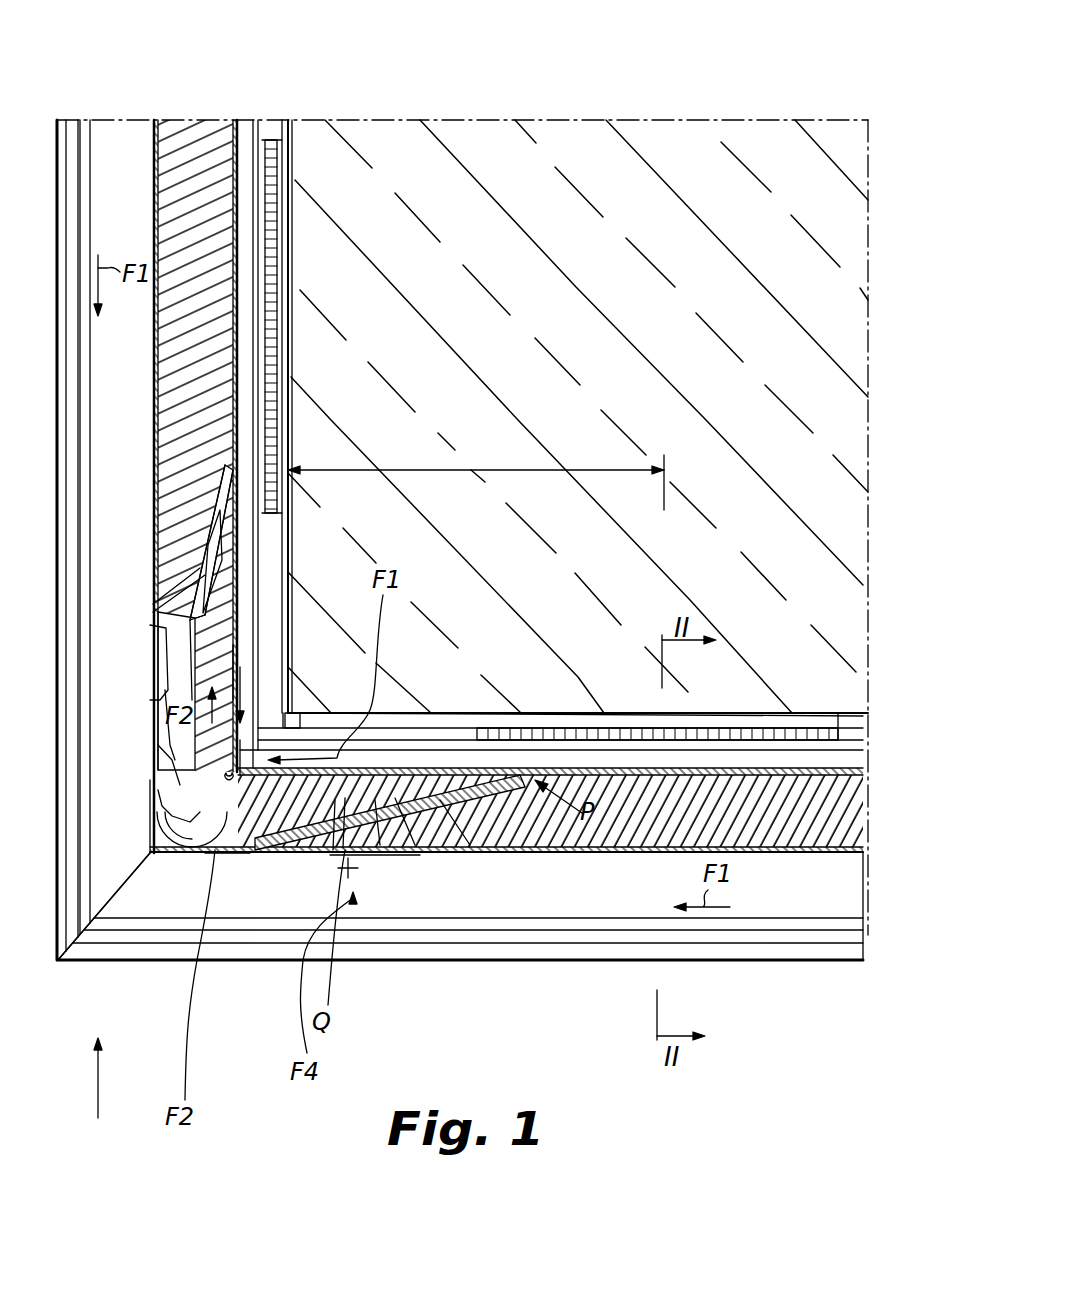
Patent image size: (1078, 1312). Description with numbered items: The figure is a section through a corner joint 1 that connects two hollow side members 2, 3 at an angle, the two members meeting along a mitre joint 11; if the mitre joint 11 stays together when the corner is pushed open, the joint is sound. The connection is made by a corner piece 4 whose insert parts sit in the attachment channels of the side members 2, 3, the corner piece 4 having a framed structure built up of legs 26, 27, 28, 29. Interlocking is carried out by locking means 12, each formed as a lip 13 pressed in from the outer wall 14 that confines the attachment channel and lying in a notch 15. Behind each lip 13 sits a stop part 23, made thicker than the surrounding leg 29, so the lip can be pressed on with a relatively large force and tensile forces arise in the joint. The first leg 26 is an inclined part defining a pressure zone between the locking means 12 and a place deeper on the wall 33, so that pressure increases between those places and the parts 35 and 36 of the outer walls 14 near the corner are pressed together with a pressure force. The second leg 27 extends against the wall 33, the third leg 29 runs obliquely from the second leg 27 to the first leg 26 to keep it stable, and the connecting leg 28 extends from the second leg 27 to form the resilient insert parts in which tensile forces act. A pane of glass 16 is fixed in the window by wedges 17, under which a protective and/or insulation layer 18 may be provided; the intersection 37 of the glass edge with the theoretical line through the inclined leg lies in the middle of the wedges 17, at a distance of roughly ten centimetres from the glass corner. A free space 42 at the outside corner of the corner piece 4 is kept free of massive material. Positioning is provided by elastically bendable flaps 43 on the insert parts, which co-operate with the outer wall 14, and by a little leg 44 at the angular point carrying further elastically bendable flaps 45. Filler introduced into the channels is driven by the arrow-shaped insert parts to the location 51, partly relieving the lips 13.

The corner joint 1 is at (113, 1087).
The hollow side member 2 is at (826, 906).
The hollow side member 3 is at (127, 137).
The corner piece 4 is at (196, 500).
The mitre joint 11 is at (118, 893).
The locking means 12 is at (138, 627).
The lip 13 is at (150, 630).
The outer wall 14 is at (158, 132).
The notch 15 is at (147, 630).
The pane of glass 16 is at (586, 160).
The wedges 17 is at (288, 165).
The protective layer and/or insulation layer 18 is at (264, 146).
The stop parts 23 is at (137, 688).
The first leg 26 is at (150, 507).
The second leg 27 is at (215, 705).
The connecting leg 28 is at (283, 715).
The third leg 29 is at (192, 532).
The wall 33 is at (238, 130).
The part of the outer wall 35 is at (203, 850).
The part of the outer wall 36 is at (152, 752).
The intersection 37 is at (292, 330).
The free space 42 is at (205, 650).
The elastically bendable flaps 43 is at (158, 798).
The little leg 44 is at (150, 847).
The elastically bendable flaps 45 is at (155, 815).
The filler location 51 is at (443, 852).